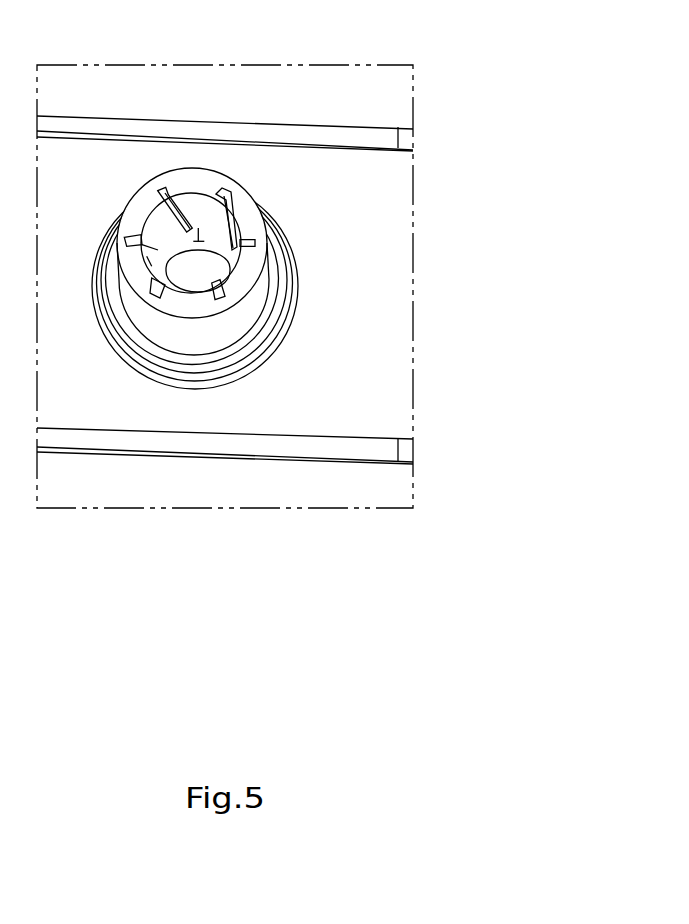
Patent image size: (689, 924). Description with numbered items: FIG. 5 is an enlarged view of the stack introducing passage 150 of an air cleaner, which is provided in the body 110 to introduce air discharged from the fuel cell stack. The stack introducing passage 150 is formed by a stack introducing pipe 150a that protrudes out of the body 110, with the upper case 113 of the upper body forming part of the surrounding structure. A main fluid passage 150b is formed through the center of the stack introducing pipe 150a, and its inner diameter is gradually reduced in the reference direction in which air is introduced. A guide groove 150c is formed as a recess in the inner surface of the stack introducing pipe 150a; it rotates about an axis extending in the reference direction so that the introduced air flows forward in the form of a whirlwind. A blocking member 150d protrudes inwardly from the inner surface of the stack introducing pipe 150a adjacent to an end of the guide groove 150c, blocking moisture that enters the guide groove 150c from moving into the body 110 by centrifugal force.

The body 110 is at (479, 308).
The upper case 113 is at (392, 322).
The stack introducing passage 150 is at (287, 220).
The stack introducing pipe 150a is at (262, 298).
The main fluid passage 150b is at (198, 230).
The guide groove 150c is at (162, 189).
The blocking member 150d is at (215, 248).